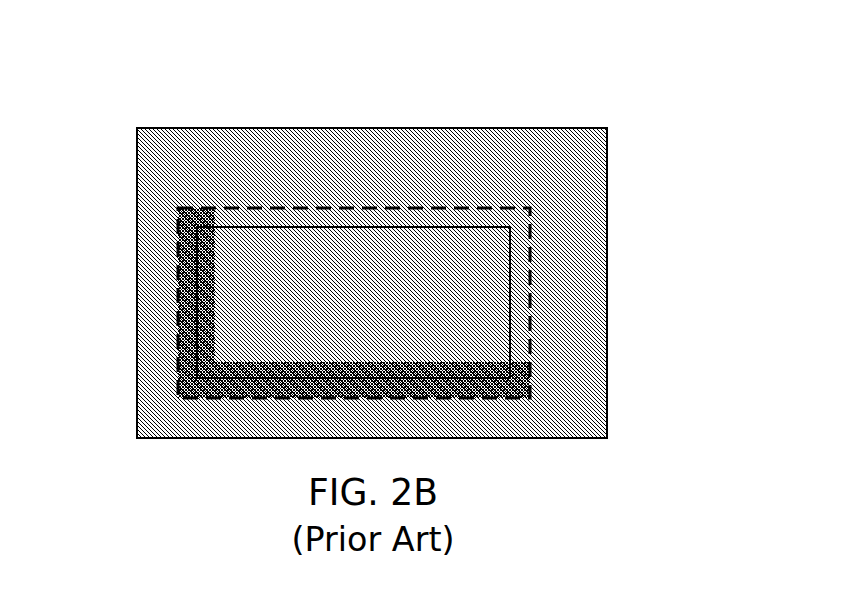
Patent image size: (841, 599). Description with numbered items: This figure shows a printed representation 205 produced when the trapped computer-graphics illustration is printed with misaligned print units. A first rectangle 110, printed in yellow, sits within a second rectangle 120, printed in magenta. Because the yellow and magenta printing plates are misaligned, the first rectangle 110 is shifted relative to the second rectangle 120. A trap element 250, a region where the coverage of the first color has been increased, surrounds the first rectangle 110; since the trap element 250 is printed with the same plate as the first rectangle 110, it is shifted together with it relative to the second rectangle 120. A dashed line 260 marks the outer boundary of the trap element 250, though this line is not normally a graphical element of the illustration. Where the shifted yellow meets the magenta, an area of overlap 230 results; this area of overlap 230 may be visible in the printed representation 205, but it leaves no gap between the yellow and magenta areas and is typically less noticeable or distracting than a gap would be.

The printed representation 205 is at (360, 225).
The first rectangle 110 is at (188, 229).
The second rectangle 120 is at (137, 350).
The area of overlap 230 is at (495, 372).
The trap element 250 is at (522, 283).
The dashed line 260 is at (531, 210).